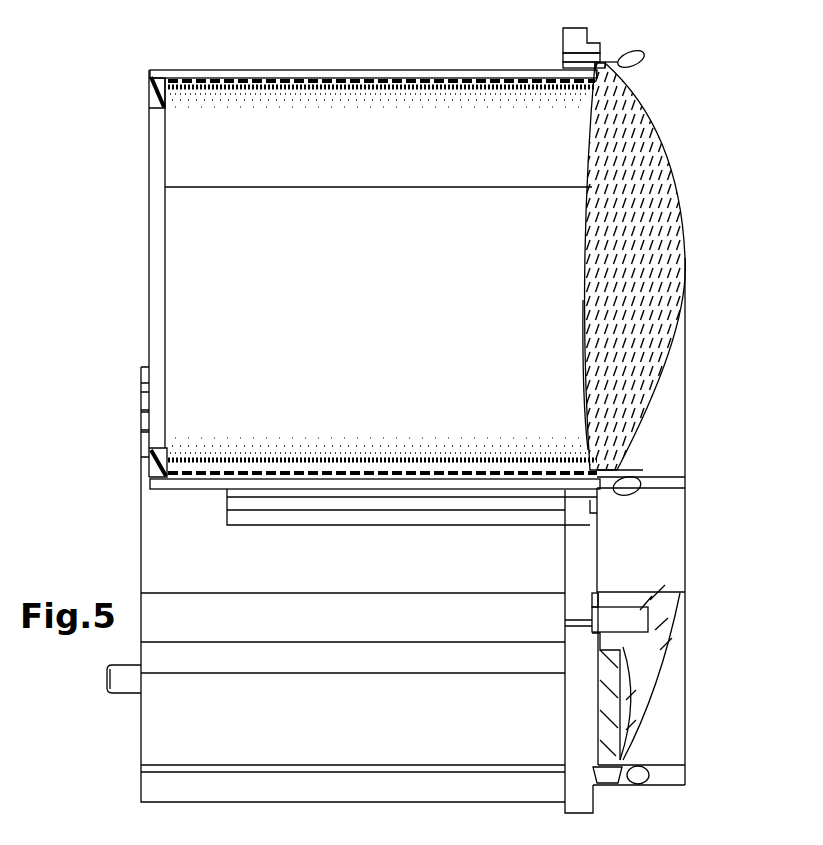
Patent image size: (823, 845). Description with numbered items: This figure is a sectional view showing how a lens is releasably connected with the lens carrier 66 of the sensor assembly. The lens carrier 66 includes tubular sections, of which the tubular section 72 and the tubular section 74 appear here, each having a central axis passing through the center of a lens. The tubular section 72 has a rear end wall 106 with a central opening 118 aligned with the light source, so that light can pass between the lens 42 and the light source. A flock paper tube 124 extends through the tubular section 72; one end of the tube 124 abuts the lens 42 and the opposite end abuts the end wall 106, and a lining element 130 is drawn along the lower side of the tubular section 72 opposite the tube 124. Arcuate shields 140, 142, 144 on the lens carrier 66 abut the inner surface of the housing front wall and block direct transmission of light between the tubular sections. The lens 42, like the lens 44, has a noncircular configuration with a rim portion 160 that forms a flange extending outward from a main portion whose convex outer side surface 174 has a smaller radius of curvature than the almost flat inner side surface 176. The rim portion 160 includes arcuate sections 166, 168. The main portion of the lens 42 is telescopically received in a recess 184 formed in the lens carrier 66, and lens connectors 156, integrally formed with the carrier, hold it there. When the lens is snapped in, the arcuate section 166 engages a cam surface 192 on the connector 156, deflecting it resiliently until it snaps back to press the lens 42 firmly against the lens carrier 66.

The lens 42 is at (632, 250).
The lens 44 is at (653, 650).
The lens carrier 66 is at (348, 54).
The tubular section 72 is at (133, 336).
The tubular section 74 is at (128, 712).
The rear end wall 106 is at (150, 98).
The central opening 118 is at (163, 244).
The tube 124 is at (386, 76).
The lower lining 130 is at (440, 460).
The arcuate shield 140 is at (668, 478).
The arcuate shield 142 is at (635, 543).
The arcuate shield 144 is at (665, 778).
The lens connector 156 is at (636, 36).
The rim portion 160 is at (647, 54).
The arcuate section 166 is at (603, 43).
The arcuate section 168 is at (614, 443).
The outer side surface 174 is at (668, 388).
The inner side surface 176 is at (590, 386).
The recess 184 is at (603, 50).
The cam surface 192 is at (628, 64).